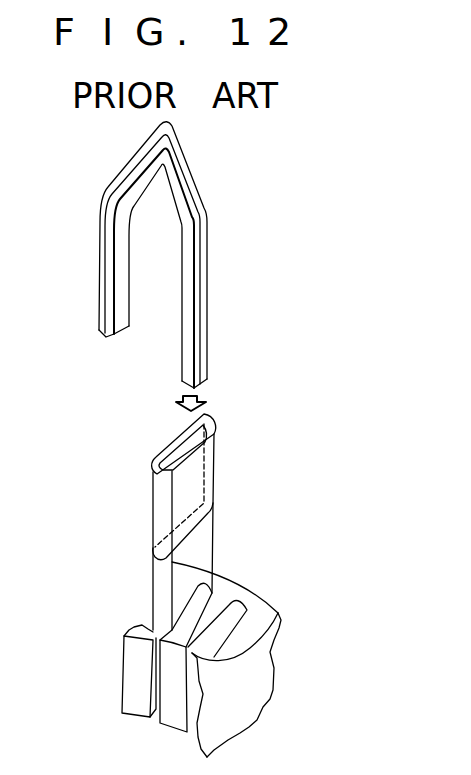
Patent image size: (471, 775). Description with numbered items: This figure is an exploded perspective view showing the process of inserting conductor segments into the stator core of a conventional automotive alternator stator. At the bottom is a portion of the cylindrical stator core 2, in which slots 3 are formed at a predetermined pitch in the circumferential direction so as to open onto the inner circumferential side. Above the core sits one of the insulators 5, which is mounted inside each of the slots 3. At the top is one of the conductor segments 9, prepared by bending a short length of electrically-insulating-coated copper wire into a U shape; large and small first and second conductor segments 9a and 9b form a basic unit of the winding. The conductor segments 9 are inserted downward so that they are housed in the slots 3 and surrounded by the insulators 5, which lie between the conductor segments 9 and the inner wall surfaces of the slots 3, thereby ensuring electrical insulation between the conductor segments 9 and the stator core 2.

The stator core 2 is at (224, 655).
The slots 3 is at (240, 612).
The insulators 5 is at (221, 463).
The conductor segments 9 is at (190, 255).
The first conductor segment 9a is at (203, 246).
The second conductor segment 9b is at (190, 280).